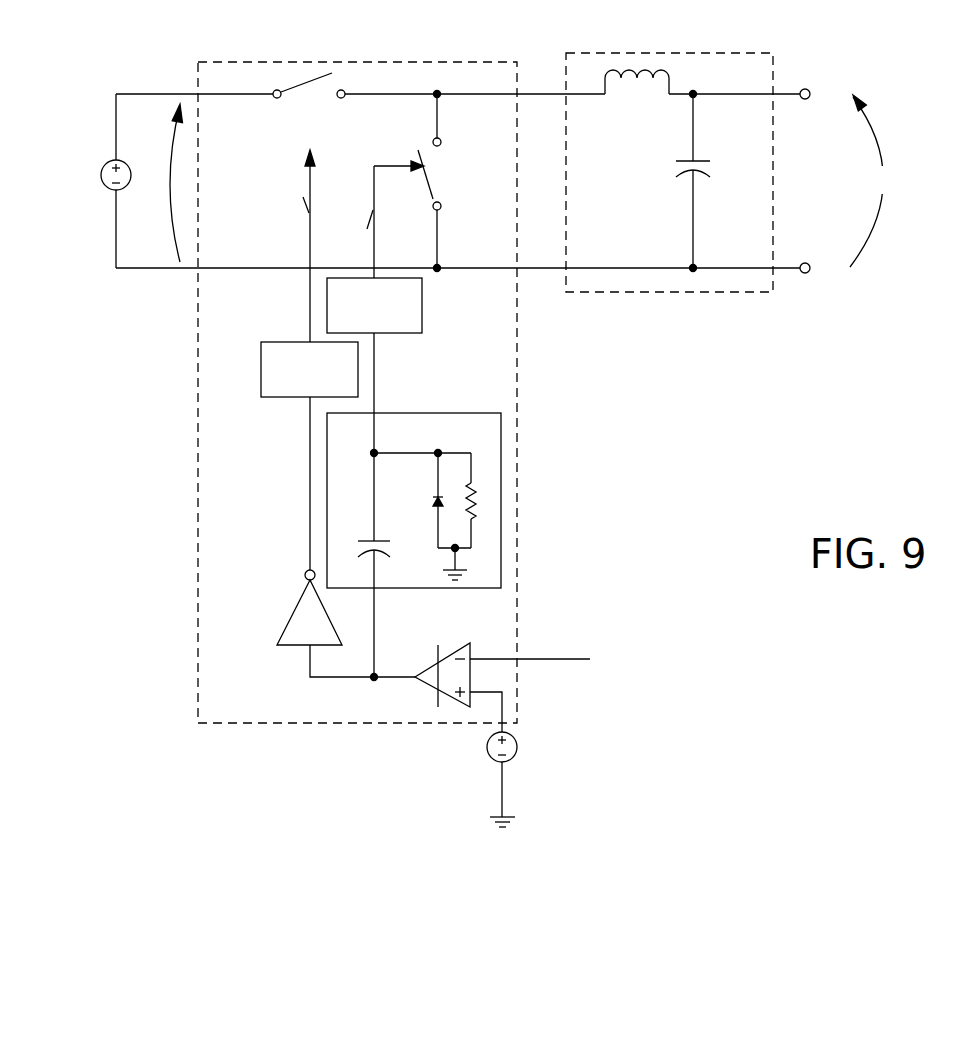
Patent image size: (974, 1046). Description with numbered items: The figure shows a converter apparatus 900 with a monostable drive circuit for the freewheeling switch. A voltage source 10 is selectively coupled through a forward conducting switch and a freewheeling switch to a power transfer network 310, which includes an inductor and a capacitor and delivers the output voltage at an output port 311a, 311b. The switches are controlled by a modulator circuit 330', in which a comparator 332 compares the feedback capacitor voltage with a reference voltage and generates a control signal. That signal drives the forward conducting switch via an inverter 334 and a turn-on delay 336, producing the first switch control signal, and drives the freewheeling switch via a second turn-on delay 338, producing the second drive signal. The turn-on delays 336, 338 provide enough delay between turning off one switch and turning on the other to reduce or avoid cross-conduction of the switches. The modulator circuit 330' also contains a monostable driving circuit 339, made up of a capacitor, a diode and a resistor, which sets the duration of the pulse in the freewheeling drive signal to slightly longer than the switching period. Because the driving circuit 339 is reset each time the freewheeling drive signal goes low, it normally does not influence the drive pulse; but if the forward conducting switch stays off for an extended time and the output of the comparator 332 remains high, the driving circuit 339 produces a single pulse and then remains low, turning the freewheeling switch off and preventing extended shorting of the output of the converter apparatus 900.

The voltage source 10 is at (103, 177).
The power transfer network 310 is at (670, 53).
The output port 311a is at (809, 88).
The output port 311b is at (809, 274).
The modulator circuit 330' is at (406, 392).
The comparator 332 is at (438, 645).
The inverter 334 is at (307, 587).
The turn-on delay 336 is at (261, 370).
The second turn-on delay 338 is at (422, 305).
The monostable driving circuit 339 is at (414, 413).
The converter apparatus 900 is at (725, 388).